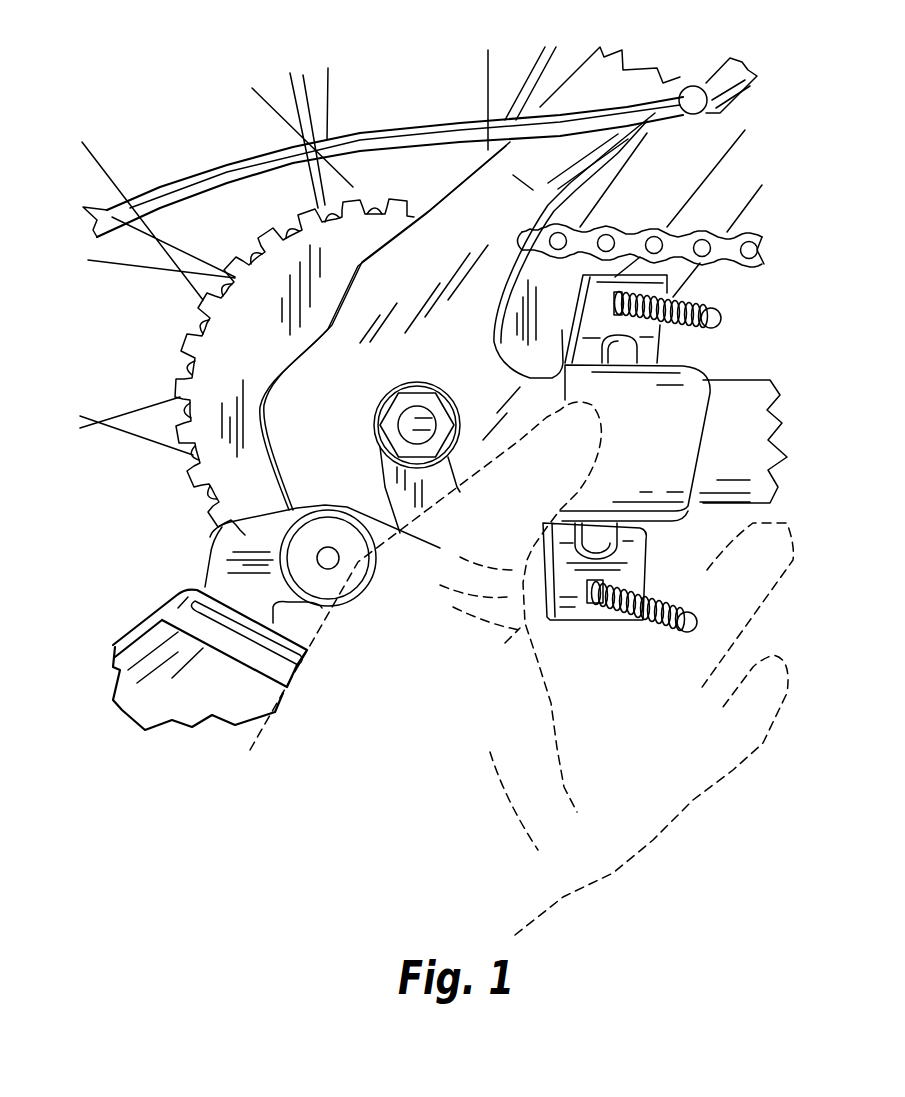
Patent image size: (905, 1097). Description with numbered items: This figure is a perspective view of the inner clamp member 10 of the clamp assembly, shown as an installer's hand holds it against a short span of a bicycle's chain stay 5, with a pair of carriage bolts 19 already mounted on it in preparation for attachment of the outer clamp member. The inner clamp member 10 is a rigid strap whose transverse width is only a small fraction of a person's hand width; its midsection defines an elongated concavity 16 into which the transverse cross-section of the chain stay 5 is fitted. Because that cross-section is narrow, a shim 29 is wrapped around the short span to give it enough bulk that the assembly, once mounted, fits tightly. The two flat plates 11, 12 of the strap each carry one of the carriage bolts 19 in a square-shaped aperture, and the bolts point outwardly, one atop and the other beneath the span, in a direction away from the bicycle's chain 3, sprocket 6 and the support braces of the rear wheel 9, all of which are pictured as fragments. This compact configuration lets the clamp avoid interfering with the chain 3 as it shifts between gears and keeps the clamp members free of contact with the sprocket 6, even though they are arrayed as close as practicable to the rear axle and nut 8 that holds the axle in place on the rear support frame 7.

The chain 3 is at (745, 238).
The chain stay 5 is at (733, 402).
The sprocket 6 is at (240, 334).
The rear support frame 7 is at (487, 223).
The rear axle and nut 8 is at (393, 420).
The rear wheel 9 is at (105, 167).
The inner clamp member 10 is at (648, 453).
The flat plate 11 is at (600, 308).
The flat plate 12 is at (616, 526).
The elongated concavity 16 is at (600, 548).
The carriage bolts 19 is at (720, 322).
The shim 29 is at (666, 452).